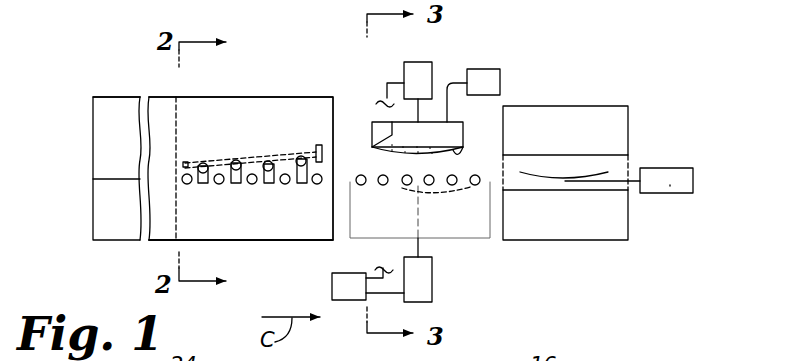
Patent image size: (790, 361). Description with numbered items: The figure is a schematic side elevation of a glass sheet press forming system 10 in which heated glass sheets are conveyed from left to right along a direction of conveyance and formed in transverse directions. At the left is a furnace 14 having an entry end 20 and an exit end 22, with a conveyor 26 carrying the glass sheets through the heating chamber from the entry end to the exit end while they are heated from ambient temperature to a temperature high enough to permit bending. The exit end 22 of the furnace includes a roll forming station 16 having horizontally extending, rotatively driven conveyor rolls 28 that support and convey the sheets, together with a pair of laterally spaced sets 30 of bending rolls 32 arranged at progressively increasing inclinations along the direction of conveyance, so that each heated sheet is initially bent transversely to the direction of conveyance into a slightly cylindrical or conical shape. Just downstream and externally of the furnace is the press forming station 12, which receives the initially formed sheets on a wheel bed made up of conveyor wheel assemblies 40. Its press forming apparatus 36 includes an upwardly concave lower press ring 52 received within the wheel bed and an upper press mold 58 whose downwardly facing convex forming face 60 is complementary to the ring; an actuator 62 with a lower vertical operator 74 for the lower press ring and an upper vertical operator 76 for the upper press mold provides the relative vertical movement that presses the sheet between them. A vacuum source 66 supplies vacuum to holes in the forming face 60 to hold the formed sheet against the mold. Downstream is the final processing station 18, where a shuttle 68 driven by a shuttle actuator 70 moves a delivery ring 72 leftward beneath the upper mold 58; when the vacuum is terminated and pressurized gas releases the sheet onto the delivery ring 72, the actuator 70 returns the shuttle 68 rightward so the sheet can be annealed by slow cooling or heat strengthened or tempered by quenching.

The glass sheet press forming system 10 is at (510, 58).
The press forming station 12 is at (390, 66).
The furnace 14 is at (124, 68).
The roll forming station 16 is at (280, 86).
The final processing station 18 is at (586, 90).
The entry end 20 is at (113, 96).
The exit end 22 is at (287, 241).
The conveyor 26 is at (117, 178).
The conveyor rolls 28 is at (218, 185).
The sets of bending rolls 30 is at (247, 151).
The bending rolls 32 is at (235, 160).
The press forming apparatus 36 is at (473, 210).
The conveyor wheel assemblies 40 is at (383, 186).
The lower press ring 52 is at (440, 193).
The upper press mold 58 is at (362, 130).
The forming face 60 is at (453, 162).
The actuator 62 is at (327, 284).
The vacuum source 66 is at (485, 69).
The shuttle 68 is at (627, 168).
The shuttle actuator 70 is at (670, 185).
The delivery ring 72 is at (598, 173).
The lower vertical operator 74 is at (423, 285).
The upper vertical operator 76 is at (418, 68).